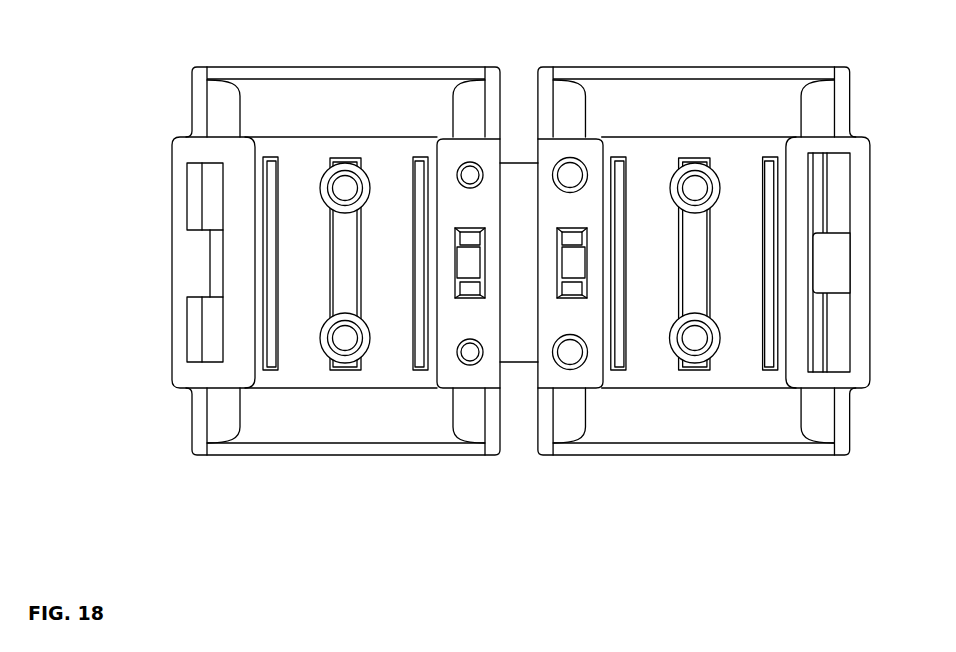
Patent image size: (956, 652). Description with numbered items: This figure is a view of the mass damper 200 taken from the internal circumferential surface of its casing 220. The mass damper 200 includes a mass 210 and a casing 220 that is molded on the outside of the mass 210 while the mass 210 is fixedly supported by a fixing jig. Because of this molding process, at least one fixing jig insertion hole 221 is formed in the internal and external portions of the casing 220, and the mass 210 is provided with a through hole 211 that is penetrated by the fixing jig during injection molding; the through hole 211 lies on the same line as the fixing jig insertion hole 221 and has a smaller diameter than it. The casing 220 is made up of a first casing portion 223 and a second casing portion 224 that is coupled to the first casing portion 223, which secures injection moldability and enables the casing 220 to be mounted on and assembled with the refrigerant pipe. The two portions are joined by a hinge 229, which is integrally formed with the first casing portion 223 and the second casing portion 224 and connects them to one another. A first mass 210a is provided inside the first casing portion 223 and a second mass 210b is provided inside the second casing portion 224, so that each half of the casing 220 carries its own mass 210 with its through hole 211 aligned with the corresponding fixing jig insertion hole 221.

The mass damper 200 is at (454, 285).
The mass 210 is at (521, 287).
The first mass 210a is at (325, 350).
The second mass 210b is at (715, 350).
The through hole 211 is at (335, 188).
The fixing jig insertion hole 221 is at (326, 185).
The casing 220 is at (520, 285).
The first casing portion 223 is at (460, 440).
The second casing portion 224 is at (578, 440).
The hinge 229 is at (519, 173).